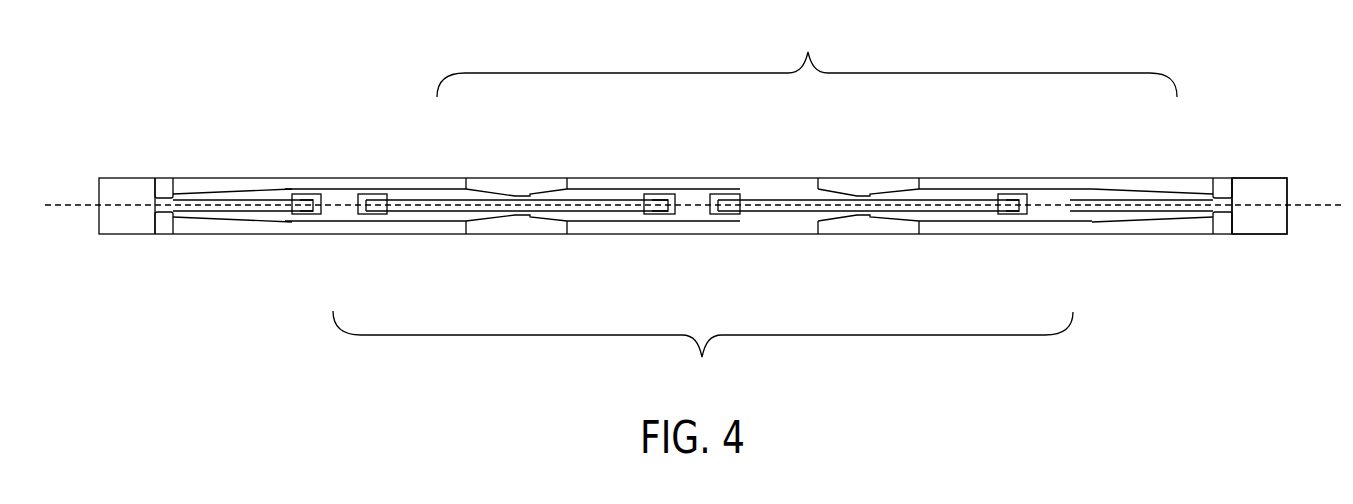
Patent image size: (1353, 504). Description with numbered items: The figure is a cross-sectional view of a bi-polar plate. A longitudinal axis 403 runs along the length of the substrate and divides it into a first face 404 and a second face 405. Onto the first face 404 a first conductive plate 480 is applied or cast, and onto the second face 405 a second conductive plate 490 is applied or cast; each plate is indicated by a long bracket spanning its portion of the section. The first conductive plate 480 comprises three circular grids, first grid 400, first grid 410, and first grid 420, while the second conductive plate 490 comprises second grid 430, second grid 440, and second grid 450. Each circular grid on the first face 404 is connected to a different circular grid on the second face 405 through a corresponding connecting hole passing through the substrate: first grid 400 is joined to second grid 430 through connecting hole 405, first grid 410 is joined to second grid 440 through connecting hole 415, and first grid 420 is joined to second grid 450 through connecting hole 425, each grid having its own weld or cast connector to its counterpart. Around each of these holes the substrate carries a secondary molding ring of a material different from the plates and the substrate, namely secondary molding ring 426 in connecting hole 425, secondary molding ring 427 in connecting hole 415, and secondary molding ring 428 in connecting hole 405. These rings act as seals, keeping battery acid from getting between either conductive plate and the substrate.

The first grid 400 is at (1107, 195).
The longitudinal axis 403 is at (1307, 200).
The first face 404 is at (1252, 187).
The second face / connecting hole 405 is at (1016, 197).
The first grid 410 is at (745, 195).
The connecting hole 415 is at (663, 196).
The first grid 420 is at (392, 195).
The connecting hole 425 is at (312, 199).
The secondary molding ring 426 is at (317, 210).
The secondary molding ring 427 is at (670, 215).
The secondary molding ring 428 is at (1022, 213).
The second grid 430 is at (1107, 217).
The second grid 440 is at (753, 218).
The second grid 450 is at (402, 218).
The first conductive plate 480 is at (807, 61).
The second conductive plate 490 is at (703, 352).